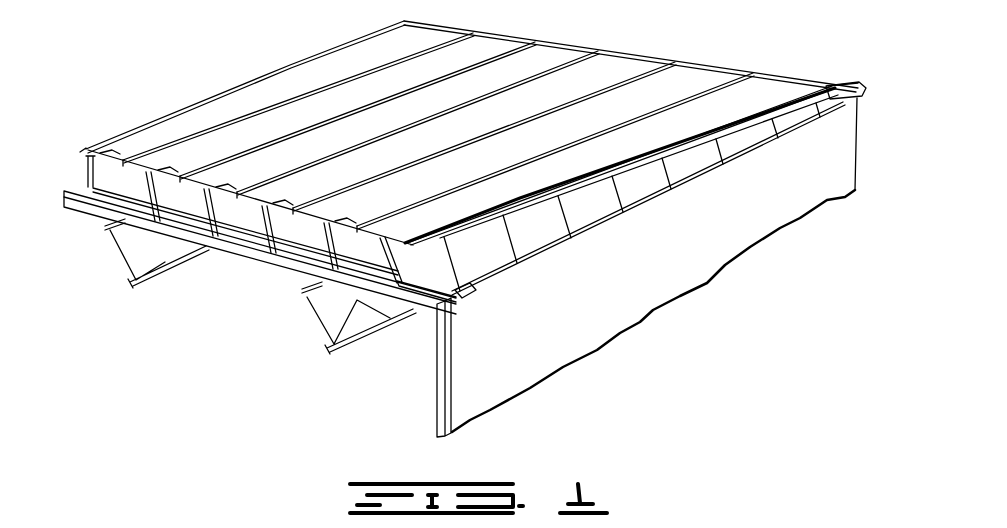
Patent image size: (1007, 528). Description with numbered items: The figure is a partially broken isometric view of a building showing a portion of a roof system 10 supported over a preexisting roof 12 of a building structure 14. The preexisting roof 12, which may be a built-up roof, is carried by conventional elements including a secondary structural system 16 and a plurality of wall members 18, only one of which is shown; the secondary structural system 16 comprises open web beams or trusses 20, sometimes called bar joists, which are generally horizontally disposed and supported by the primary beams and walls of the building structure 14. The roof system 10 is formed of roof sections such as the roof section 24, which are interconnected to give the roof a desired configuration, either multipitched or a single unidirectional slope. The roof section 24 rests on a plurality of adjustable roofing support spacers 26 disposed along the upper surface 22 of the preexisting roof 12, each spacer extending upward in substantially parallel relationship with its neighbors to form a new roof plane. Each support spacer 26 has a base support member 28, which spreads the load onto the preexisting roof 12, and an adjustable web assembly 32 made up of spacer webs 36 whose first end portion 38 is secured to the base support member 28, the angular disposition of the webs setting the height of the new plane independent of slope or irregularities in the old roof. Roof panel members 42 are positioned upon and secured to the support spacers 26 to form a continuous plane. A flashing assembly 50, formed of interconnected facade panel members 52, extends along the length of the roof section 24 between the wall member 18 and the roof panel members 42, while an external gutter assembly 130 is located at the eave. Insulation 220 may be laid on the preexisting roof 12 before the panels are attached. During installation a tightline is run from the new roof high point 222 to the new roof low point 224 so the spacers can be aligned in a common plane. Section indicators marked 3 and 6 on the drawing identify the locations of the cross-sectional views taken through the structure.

The roof system 10 is at (298, 50).
The preexisting roof 12 is at (410, 312).
The building structure 14 is at (858, 162).
The secondary structural system 16 is at (145, 287).
The wall member 18 is at (568, 318).
The truss 20 is at (305, 294).
The upper surface 22 is at (252, 248).
The roof section 24 is at (518, 36).
The adjustable roofing support spacer 26 is at (80, 165).
The base support member 28 is at (100, 199).
The adjustable web assembly 32 is at (158, 192).
The spacer web 36 is at (142, 186).
The first end portion 38 is at (396, 263).
The roof panel member 42 is at (400, 132).
The flashing assembly 50 is at (605, 210).
The facade panel member 52 is at (499, 266).
The external gutter assembly 130 is at (852, 82).
The insulation 220 is at (457, 295).
The new roof high point 222 is at (412, 242).
The new roof low point 224 is at (858, 82).
The section line 3- 3 is at (574, 183).
The section line 6- 6 is at (770, 64).